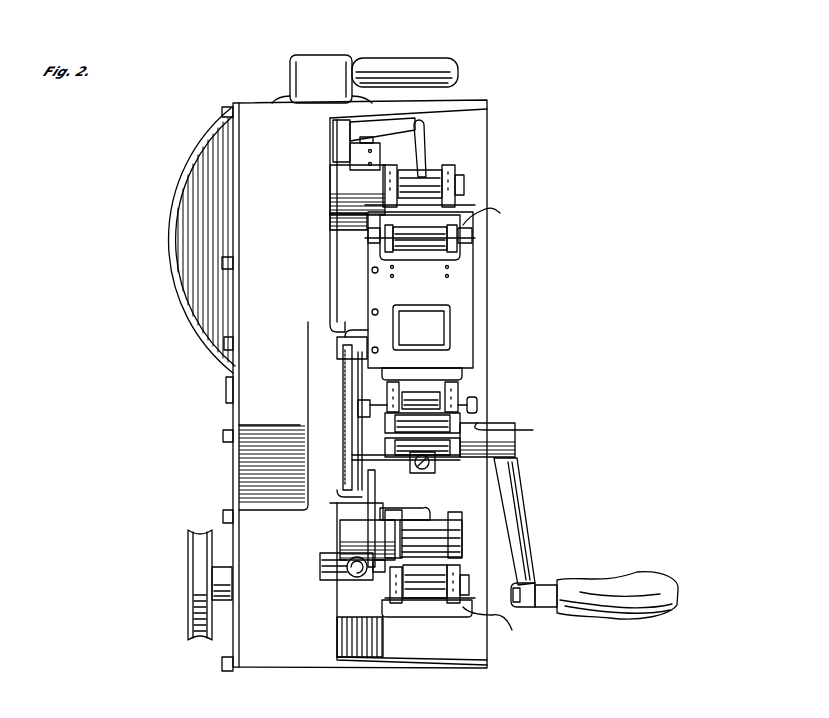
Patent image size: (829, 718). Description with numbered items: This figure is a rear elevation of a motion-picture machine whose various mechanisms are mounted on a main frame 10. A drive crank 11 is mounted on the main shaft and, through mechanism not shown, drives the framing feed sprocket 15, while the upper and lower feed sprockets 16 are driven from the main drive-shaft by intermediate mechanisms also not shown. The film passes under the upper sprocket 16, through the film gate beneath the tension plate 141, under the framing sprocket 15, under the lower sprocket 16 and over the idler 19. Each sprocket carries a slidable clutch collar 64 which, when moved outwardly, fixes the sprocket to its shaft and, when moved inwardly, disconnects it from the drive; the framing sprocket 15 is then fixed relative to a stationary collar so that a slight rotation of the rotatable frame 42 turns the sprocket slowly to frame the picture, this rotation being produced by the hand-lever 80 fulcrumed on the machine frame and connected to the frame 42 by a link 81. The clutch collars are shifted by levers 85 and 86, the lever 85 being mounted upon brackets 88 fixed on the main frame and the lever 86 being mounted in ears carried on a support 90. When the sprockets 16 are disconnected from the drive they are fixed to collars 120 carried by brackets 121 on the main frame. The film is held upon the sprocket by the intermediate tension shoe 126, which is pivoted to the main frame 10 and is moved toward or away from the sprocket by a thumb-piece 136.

The main frame 10 is at (490, 140).
The drive crank 11 is at (525, 503).
The framing feed sprocket 15 is at (463, 385).
The feed sprockets 16 is at (450, 163).
The idler 19 is at (457, 528).
The rotatable frame 42 is at (477, 405).
The clutch collar 64 is at (433, 395).
The hand-lever 80 is at (337, 580).
The link 81 is at (373, 490).
The lever 85 is at (422, 140).
The lever 86 is at (433, 513).
The brackets 88 is at (343, 128).
The support 90 is at (435, 468).
The fixed collars 120 is at (380, 168).
The brackets 121 is at (352, 533).
The intermediate shoe 126 is at (447, 435).
The thumb-piece 136 is at (511, 424).
The tension plate 141 is at (420, 290).